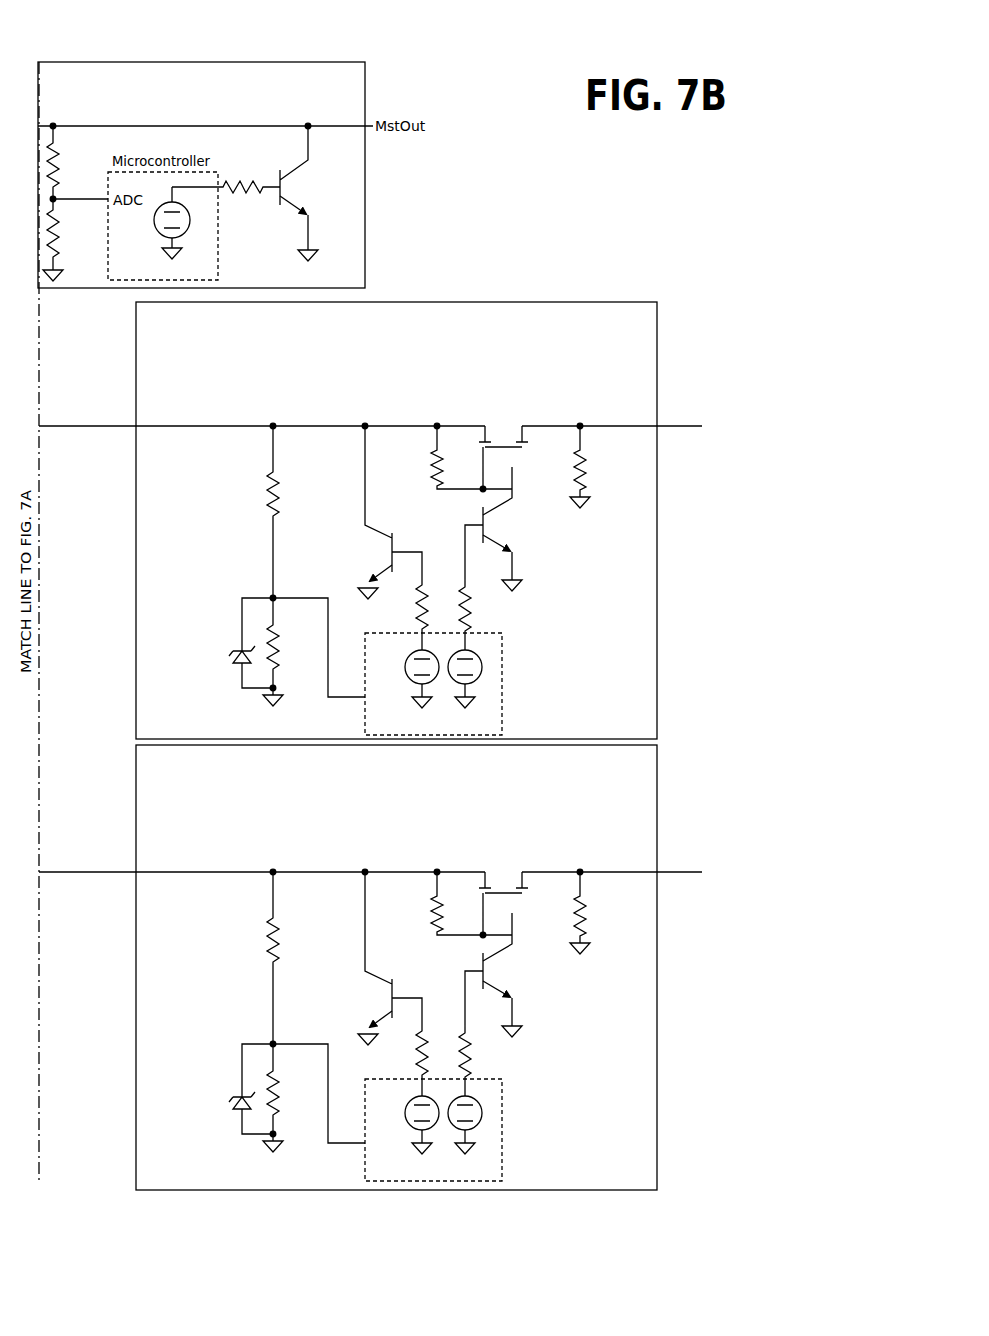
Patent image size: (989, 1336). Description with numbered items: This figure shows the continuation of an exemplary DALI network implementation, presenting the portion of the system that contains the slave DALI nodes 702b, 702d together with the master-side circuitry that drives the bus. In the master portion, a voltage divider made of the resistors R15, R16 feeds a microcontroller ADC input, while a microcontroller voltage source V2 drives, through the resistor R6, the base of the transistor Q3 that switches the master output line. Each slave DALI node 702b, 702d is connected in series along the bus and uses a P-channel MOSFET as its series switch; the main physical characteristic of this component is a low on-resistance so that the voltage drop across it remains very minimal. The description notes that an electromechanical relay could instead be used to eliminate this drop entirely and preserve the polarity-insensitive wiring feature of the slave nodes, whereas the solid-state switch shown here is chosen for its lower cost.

The slave DALI node 702b is at (402, 520).
The slave DALI node 702d is at (402, 967).
The resistor 27K R15 is at (70, 162).
The resistor 12k R16 is at (68, 240).
The resistor 1k R6 is at (226, 187).
The transistor MJD31C Q3 is at (317, 193).
The voltage source V2 is at (177, 223).